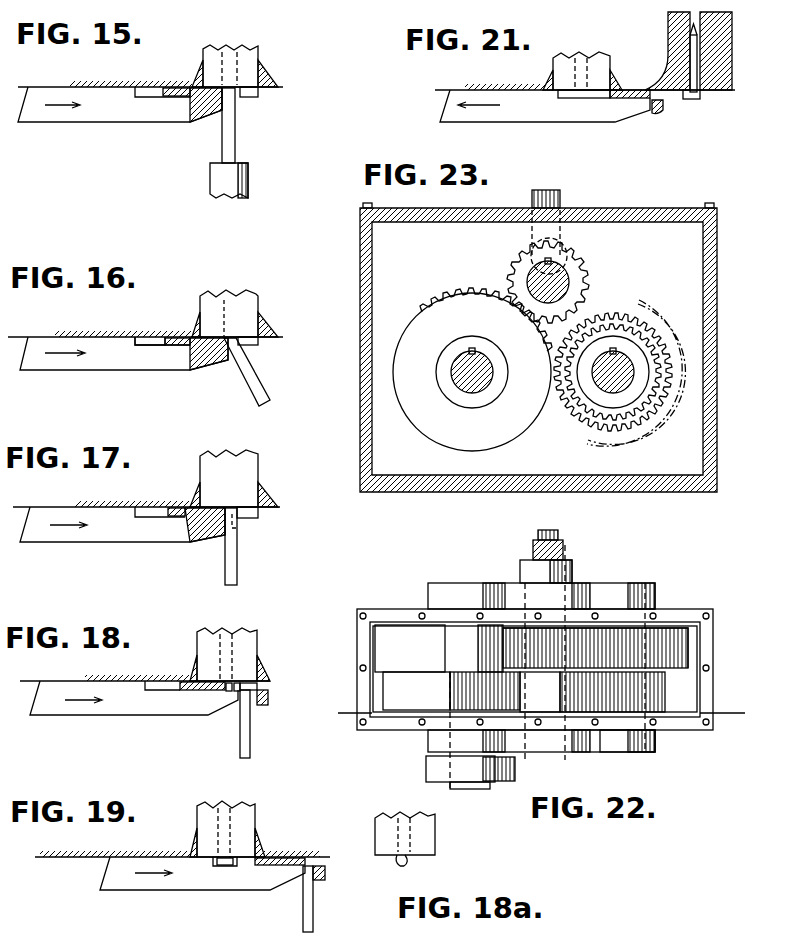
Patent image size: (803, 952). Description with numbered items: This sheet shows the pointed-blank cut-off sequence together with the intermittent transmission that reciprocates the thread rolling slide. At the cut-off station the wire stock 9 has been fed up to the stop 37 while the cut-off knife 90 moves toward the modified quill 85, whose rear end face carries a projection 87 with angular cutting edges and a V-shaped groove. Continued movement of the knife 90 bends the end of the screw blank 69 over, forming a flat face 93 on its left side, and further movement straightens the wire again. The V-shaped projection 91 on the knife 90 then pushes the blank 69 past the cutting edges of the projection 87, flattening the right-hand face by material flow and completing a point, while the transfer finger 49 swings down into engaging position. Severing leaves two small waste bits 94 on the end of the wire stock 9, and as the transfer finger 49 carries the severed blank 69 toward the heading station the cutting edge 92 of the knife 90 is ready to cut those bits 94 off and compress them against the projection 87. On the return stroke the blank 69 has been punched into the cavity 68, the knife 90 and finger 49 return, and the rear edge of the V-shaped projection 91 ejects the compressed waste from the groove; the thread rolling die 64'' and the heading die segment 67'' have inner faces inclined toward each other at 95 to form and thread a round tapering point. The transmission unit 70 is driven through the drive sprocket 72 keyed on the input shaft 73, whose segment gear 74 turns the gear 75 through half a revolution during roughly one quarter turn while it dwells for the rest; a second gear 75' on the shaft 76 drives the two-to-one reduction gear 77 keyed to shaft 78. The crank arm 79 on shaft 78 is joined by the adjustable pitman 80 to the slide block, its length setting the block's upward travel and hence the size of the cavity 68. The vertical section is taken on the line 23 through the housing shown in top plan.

In FIG. 15, the wire stock 9 is at (232, 58).
In FIG. 18, the wire stock 9 is at (228, 643).
In FIG. 19, the wire stock 9 is at (235, 808).
In FIG. 18a, the wire stock 9 is at (390, 823).
In FIG. 22, the section line 23 is at (542, 713).
In FIG. 15, the stop 37 is at (248, 170).
In FIG. 18, the transfer finger 49 is at (268, 700).
In FIG. 19, the transfer finger 49 is at (325, 874).
In FIG. 21, the transfer finger 49 is at (658, 113).
In FIG. 21, the thread rolling die 64'' is at (645, 51).
In FIG. 21, the heading die segment 67'' is at (737, 51).
In FIG. 21, the cavity 68 is at (700, 96).
In FIG. 15, the screw blank 69 is at (235, 148).
In FIG. 16, the screw blank 69 is at (258, 383).
In FIG. 17, the screw blank 69 is at (237, 557).
In FIG. 18, the screw blank 69 is at (250, 748).
In FIG. 19, the screw blank 69 is at (313, 907).
In FIG. 21, the screw blank 69 is at (700, 68).
In FIG. 23, the transmission unit 70 is at (700, 354).
In FIG. 22, the transmission unit 70 is at (692, 603).
In FIG. 22, the transmission drive sprocket 72 is at (426, 768).
In FIG. 23, the input shaft 73 is at (480, 398).
In FIG. 22, the input shaft 73 is at (468, 789).
In FIG. 23, the segment gear 74 is at (420, 422).
In FIG. 22, the segment gear 74 is at (410, 672).
In FIG. 23, the gear 75 is at (598, 395).
In FIG. 22, the gear 75 is at (605, 692).
In FIG. 22, the second gear 75' is at (632, 648).
In FIG. 22, the shaft 76 is at (622, 724).
In FIG. 23, the reduction gear 77 is at (580, 298).
In FIG. 22, the reduction gear 77 is at (503, 646).
In FIG. 23, the shaft 78 is at (540, 276).
In FIG. 22, the shaft 78 is at (585, 590).
In FIG. 23, the crank arm 79 is at (570, 262).
In FIG. 22, the crank arm 79 is at (520, 571).
In FIG. 23, the pitman 80 is at (560, 198).
In FIG. 15, the quill 85 is at (258, 52).
In FIG. 16, the quill 85 is at (250, 310).
In FIG. 17, the quill 85 is at (258, 490).
In FIG. 18, the quill 85 is at (245, 643).
In FIG. 19, the quill 85 is at (250, 813).
In FIG. 18a, the quill 85 is at (430, 836).
In FIG. 21, the quill 85 is at (560, 66).
In FIG. 15, the projection 87 is at (258, 97).
In FIG. 16, the projection 87 is at (258, 345).
In FIG. 17, the projection 87 is at (250, 518).
In FIG. 18, the projection 87 is at (262, 688).
In FIG. 15, the cut-off knife 90 is at (140, 122).
In FIG. 16, the cut-off knife 90 is at (152, 370).
In FIG. 17, the cut-off knife 90 is at (130, 542).
In FIG. 18, the cut-off knife 90 is at (122, 715).
In FIG. 19, the cut-off knife 90 is at (178, 890).
In FIG. 21, the cut-off knife 90 is at (555, 122).
In FIG. 15, the V-shaped projection 91 is at (175, 88).
In FIG. 16, the V-shaped projection 91 is at (178, 337).
In FIG. 17, the V-shaped projection 91 is at (176, 507).
In FIG. 18, the V-shaped projection 91 is at (190, 682).
In FIG. 19, the V-shaped projection 91 is at (275, 857).
In FIG. 16, the cutting edge 92 is at (135, 337).
In FIG. 19, the cutting edge 92 is at (215, 857).
In FIG. 16, the flat face 93 is at (227, 336).
In FIG. 17, the flat face 93 is at (227, 507).
In FIG. 18, the waste bits 94 is at (230, 692).
In FIG. 19, the waste bits 94 is at (228, 866).
In FIG. 18a, the waste bits 94 is at (400, 866).
In FIG. 21, the inclined inner faces 95 is at (688, 22).